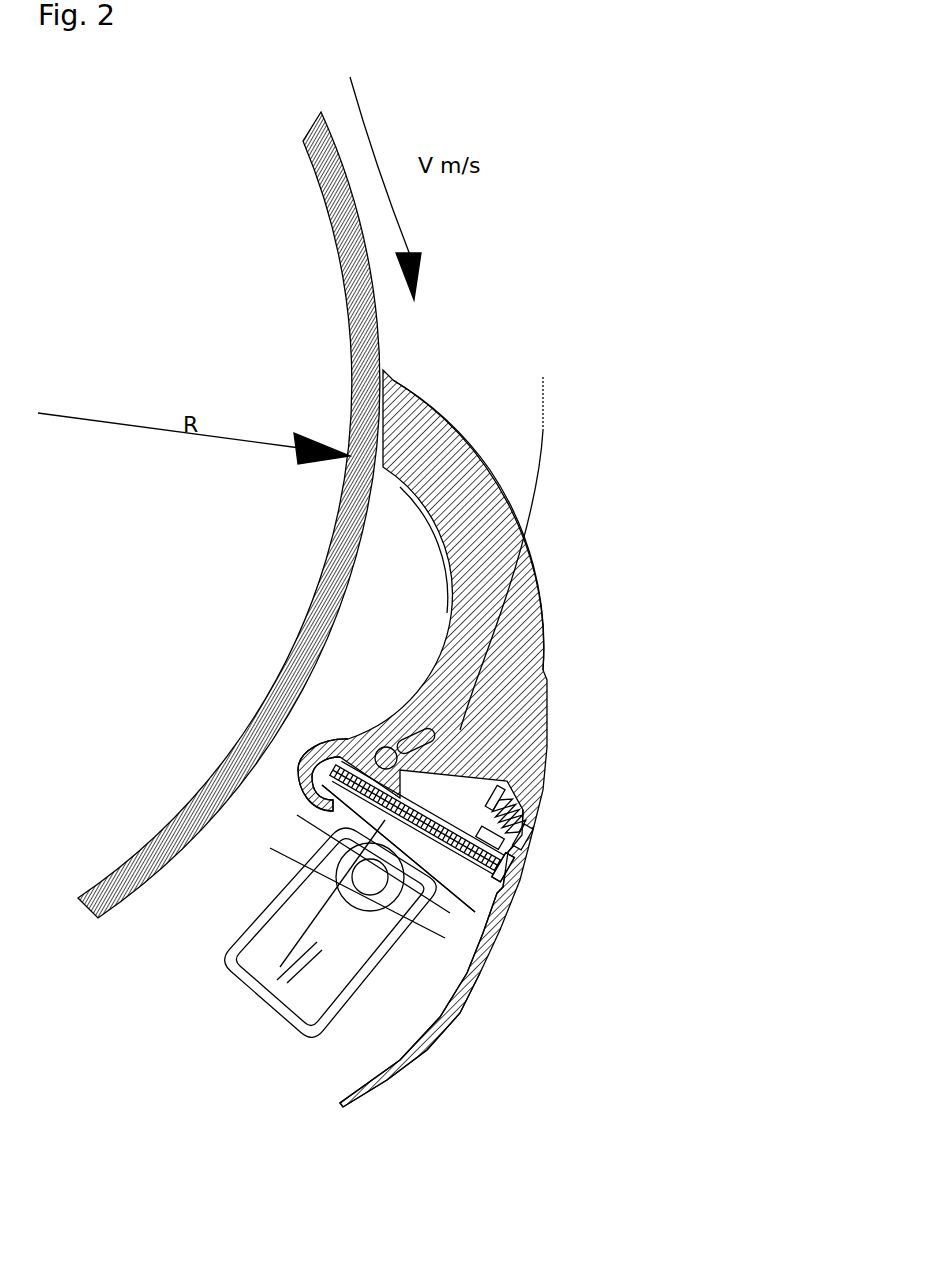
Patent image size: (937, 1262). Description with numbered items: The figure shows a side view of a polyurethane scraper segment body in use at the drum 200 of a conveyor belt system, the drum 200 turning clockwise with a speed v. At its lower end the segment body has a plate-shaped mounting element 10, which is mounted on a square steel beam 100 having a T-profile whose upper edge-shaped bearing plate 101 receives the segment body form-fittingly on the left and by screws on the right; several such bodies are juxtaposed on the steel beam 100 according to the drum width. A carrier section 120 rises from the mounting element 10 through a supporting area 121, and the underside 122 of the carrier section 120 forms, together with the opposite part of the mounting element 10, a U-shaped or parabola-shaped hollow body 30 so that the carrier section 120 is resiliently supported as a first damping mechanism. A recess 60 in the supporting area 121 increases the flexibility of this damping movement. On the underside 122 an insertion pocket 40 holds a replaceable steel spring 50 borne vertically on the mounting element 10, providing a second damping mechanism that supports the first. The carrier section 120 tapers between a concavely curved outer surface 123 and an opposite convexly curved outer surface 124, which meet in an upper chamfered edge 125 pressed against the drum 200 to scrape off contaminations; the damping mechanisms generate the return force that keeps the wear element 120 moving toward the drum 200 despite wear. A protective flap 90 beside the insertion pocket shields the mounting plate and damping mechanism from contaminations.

The drum 200 is at (318, 598).
The carrier section 120 is at (473, 595).
The upper chamfered edge 125 is at (395, 420).
The convexly curved outer surface 124 is at (545, 592).
The concavely curved outer surface 123 is at (442, 606).
The supporting area 121 is at (400, 773).
The underside 122 is at (300, 765).
The recess 60 is at (403, 772).
The hollow body 30 is at (420, 819).
The steel spring 50 is at (530, 818).
The insertion pocket 40 is at (520, 828).
The mounting element 10 is at (495, 850).
The bearing plate 101 is at (470, 908).
The protective flap 90 is at (380, 967).
The steel beam 100 is at (440, 1013).